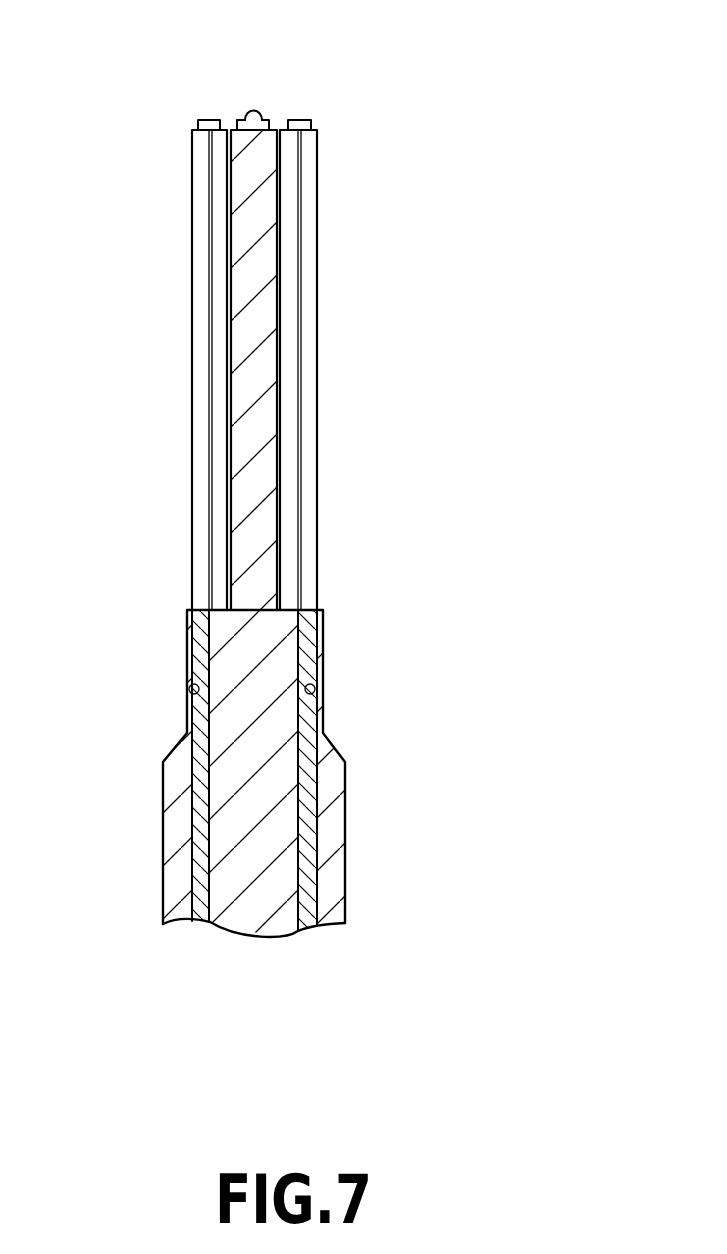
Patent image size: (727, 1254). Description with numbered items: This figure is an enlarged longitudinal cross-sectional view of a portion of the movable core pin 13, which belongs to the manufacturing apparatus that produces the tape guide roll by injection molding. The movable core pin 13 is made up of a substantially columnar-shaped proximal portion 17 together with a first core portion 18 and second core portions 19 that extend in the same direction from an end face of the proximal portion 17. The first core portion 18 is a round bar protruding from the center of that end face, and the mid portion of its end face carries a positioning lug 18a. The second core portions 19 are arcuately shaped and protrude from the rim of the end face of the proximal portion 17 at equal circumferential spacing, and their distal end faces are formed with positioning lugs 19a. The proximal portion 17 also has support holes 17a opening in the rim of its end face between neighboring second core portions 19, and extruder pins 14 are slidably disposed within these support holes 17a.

The movable core pin 13 is at (457, 143).
The extruder pins 14 is at (200, 803).
The proximal portion 17 is at (278, 652).
The support holes 17a is at (196, 691).
The first core portion 18 is at (253, 337).
The positioning lug 18a is at (252, 108).
The second core portions 19 is at (192, 284).
The positioning lugs 19a is at (206, 120).